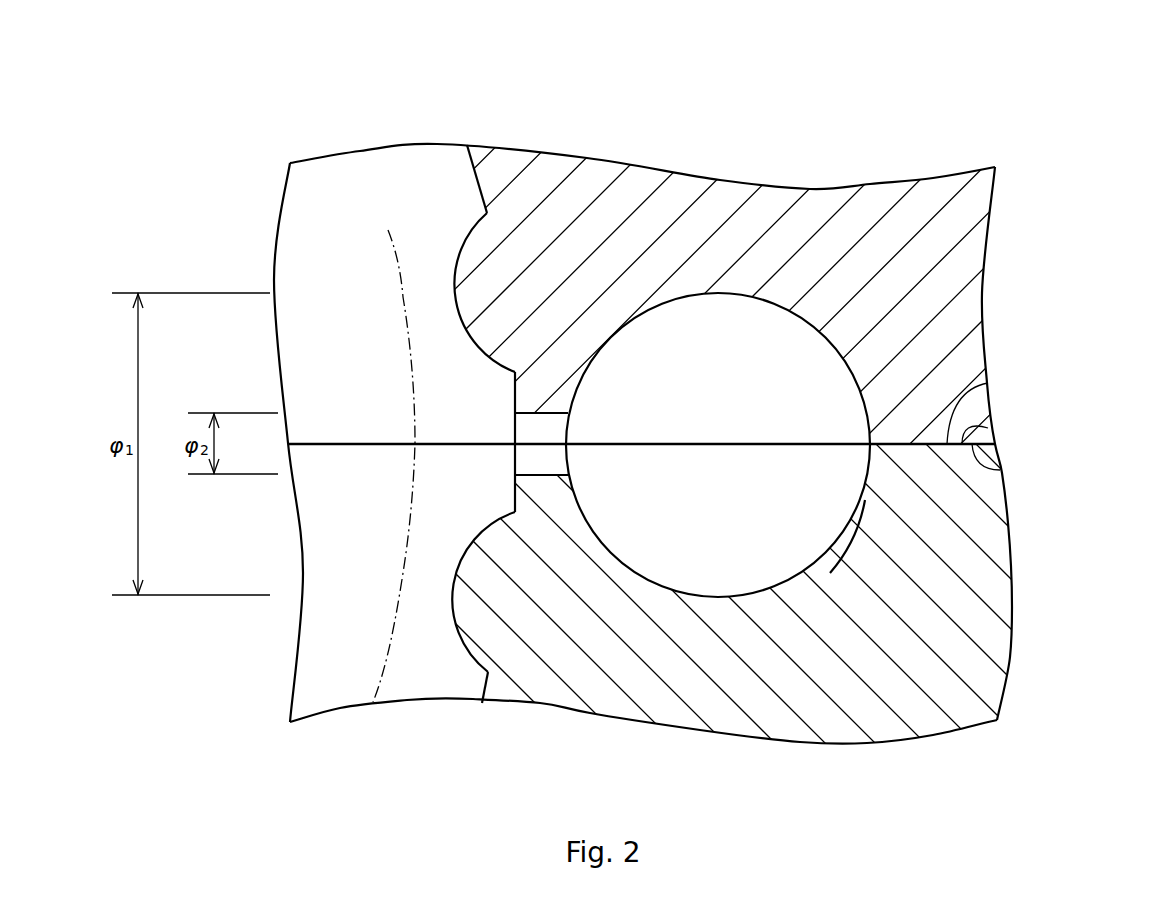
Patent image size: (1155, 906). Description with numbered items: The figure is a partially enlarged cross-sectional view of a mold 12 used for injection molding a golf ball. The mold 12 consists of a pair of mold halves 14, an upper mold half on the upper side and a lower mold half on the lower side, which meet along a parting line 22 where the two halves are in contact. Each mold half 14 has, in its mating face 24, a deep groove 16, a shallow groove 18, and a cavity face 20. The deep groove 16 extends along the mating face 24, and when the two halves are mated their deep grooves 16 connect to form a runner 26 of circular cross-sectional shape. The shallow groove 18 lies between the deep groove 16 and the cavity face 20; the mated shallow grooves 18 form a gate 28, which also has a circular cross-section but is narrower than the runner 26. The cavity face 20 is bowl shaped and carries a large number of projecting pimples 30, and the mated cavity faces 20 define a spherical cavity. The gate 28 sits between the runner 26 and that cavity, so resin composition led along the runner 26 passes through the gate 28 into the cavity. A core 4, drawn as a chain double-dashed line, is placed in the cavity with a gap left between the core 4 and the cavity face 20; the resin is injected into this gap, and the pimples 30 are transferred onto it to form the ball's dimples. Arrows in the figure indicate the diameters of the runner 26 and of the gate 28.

The core 4 is at (385, 672).
The mold 12 is at (1021, 41).
The mold half 14 is at (982, 295).
The deep groove 16 is at (718, 293).
The shallow groove 18 is at (543, 413).
The cavity face 20 is at (467, 167).
The parting line 22 is at (992, 385).
The mating face 24 is at (988, 430).
The runner 26 is at (857, 512).
The gate 28 is at (535, 413).
The pimple 30 is at (455, 300).